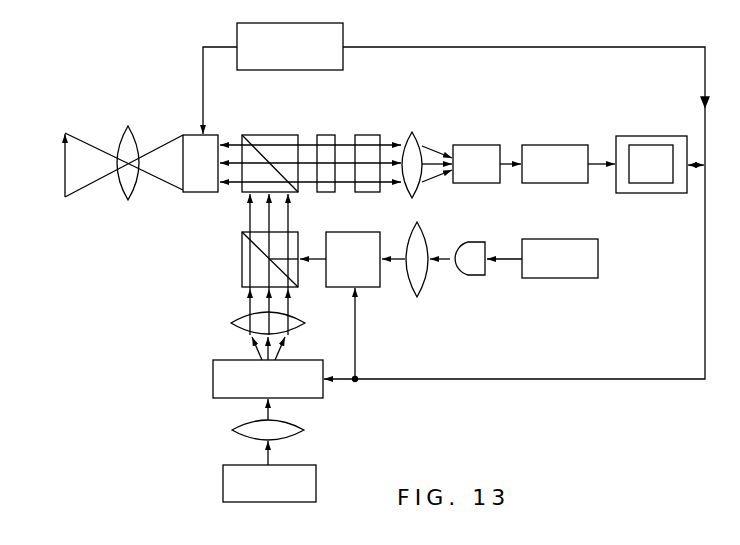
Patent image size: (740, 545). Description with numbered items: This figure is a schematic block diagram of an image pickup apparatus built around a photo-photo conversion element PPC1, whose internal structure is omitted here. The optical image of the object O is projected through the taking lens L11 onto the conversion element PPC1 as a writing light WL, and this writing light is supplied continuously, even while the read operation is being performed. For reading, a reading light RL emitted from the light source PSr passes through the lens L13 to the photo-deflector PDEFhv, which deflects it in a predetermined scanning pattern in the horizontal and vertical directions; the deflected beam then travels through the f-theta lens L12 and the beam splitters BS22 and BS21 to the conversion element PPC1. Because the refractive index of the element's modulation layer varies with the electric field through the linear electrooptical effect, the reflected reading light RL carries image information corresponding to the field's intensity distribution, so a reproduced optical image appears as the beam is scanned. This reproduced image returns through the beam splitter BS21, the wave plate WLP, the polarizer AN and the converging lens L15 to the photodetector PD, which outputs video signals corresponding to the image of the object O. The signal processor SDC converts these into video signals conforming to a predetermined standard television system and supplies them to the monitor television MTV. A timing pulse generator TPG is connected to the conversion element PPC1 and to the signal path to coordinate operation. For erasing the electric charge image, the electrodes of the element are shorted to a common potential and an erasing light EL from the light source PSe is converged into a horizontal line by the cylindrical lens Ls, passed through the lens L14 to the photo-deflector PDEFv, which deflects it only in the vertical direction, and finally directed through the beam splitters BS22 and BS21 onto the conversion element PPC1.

The timing pulse generator TPG is at (456, 201).
The object O is at (63, 158).
The taking lens L11 is at (124, 141).
The writing light WL is at (157, 189).
The photo-photo conversion element PPC1 is at (202, 184).
The beam splitter BS21 is at (272, 137).
The wave plate WLP is at (327, 134).
The polarizer AN is at (372, 134).
The converging lens L15 is at (418, 134).
The photodetector PD is at (487, 164).
The signal processor SDC is at (568, 164).
The monitor television MTV is at (660, 118).
The beam splitter BS22 is at (242, 250).
The reading light RL is at (298, 294).
The photo-deflector PDEFv is at (330, 241).
The erasing light EL is at (397, 271).
The lens L14 is at (423, 278).
The cylindrical lens Ls is at (473, 277).
The light source for erasing light PSe is at (542, 258).
The f-theta lens L12 is at (242, 317).
The photo-deflector PDEFhv is at (268, 379).
The lens L13 is at (233, 422).
The light source for reading light PSr is at (269, 471).